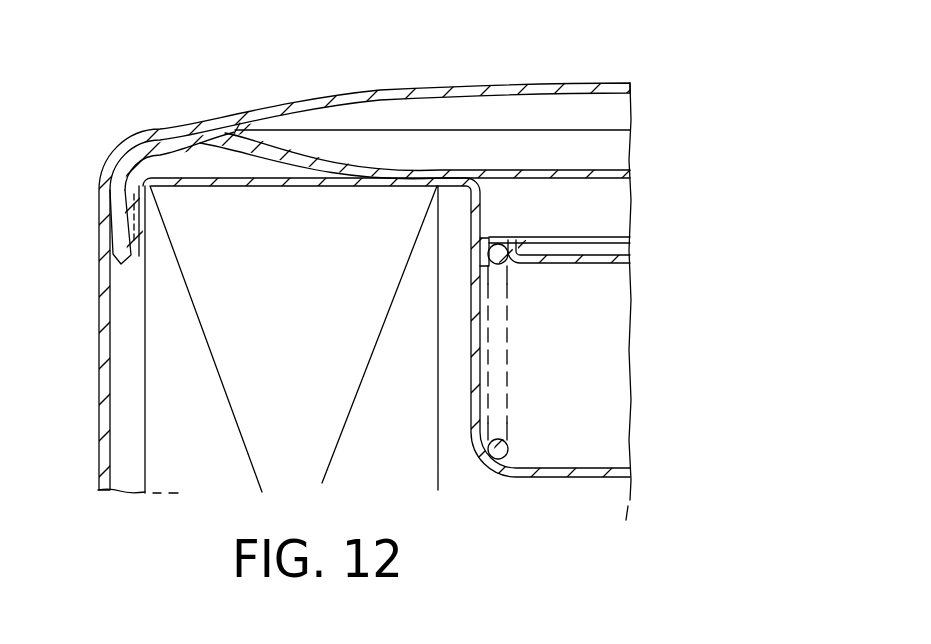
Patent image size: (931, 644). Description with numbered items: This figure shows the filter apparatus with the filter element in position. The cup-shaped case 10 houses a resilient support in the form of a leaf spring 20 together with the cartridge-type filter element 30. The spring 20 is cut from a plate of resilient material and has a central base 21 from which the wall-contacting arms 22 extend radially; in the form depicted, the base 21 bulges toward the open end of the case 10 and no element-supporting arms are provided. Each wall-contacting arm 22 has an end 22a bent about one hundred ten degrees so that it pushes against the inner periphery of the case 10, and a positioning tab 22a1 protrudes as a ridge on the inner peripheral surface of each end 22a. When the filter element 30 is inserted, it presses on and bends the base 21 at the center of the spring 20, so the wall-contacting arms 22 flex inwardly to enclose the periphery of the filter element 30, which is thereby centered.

The case 10 is at (557, 83).
The spring 20 is at (304, 147).
The base 21 is at (473, 177).
The wall-contacting arm 22 is at (198, 132).
The end 22a is at (120, 245).
The positioning tab 22a1 is at (140, 215).
The filter element 30 is at (260, 203).